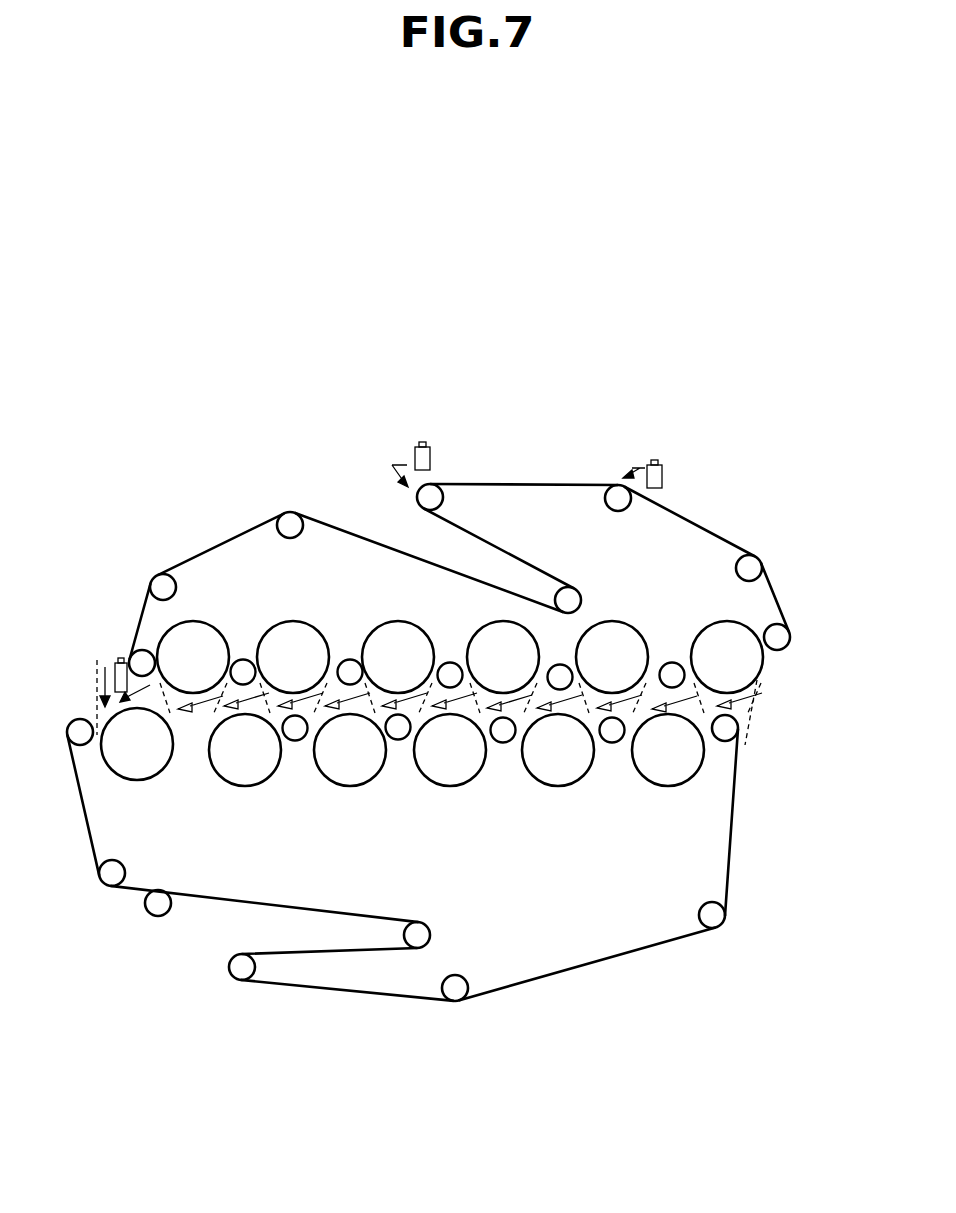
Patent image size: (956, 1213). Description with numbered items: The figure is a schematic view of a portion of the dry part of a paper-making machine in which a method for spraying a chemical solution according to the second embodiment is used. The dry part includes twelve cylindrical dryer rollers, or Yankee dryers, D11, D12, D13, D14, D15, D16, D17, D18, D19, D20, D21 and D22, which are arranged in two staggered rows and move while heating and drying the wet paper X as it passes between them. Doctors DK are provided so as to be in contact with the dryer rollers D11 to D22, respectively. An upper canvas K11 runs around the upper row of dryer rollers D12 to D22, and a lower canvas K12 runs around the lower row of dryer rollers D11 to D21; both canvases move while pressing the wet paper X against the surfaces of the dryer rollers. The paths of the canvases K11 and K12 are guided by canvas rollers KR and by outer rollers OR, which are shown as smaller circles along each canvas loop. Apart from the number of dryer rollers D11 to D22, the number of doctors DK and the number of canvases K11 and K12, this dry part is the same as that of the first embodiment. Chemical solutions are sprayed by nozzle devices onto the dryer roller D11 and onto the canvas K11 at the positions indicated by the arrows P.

The dryer roller D11 is at (110, 760).
The dryer roller D12 is at (166, 673).
The dryer roller D13 is at (218, 766).
The dryer roller D14 is at (266, 673).
The dryer roller D15 is at (323, 766).
The dryer roller D16 is at (371, 673).
The dryer roller D17 is at (423, 766).
The dryer roller D18 is at (476, 673).
The dryer roller D19 is at (531, 766).
The dryer roller D20 is at (585, 673).
The dryer roller D21 is at (641, 766).
The dryer roller D22 is at (700, 673).
The upper canvas K11 is at (508, 483).
The lower canvas K12 is at (578, 968).
The outer roller OR is at (575, 594).
The canvas roller KR is at (753, 563).
The doctor DK is at (555, 667).
The arrow indicating spraying position P is at (381, 570).
The wet paper X is at (92, 672).